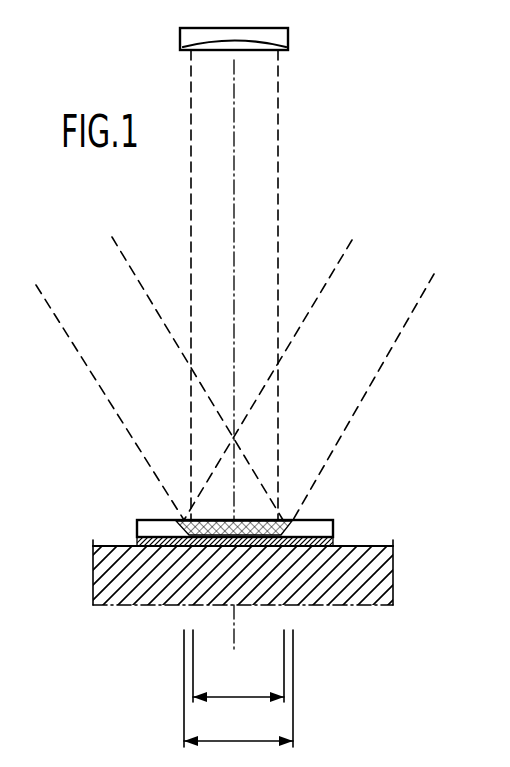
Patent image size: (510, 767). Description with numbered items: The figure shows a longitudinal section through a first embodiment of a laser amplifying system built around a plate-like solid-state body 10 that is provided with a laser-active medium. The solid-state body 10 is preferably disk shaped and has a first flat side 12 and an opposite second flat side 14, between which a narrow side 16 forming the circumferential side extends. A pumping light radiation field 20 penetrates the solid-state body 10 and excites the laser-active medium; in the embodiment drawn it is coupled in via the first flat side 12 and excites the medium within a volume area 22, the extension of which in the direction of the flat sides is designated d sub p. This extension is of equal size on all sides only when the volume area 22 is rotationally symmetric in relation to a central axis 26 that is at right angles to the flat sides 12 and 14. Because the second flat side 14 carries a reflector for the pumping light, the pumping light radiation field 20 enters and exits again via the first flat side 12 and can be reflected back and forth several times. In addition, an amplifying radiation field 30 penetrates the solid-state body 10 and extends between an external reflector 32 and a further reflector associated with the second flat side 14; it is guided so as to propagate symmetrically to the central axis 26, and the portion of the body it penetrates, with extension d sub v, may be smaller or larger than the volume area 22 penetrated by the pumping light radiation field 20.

The solid-state body 10 is at (250, 517).
The first flat side 12 is at (282, 520).
The second flat side 14 is at (322, 548).
The narrow side 16 is at (318, 528).
The pumping light radiation field 20 is at (352, 382).
The volume area 22 is at (176, 520).
The central axis 26 is at (238, 638).
The amplifying radiation field 30 is at (262, 113).
The external reflector 32 is at (265, 37).